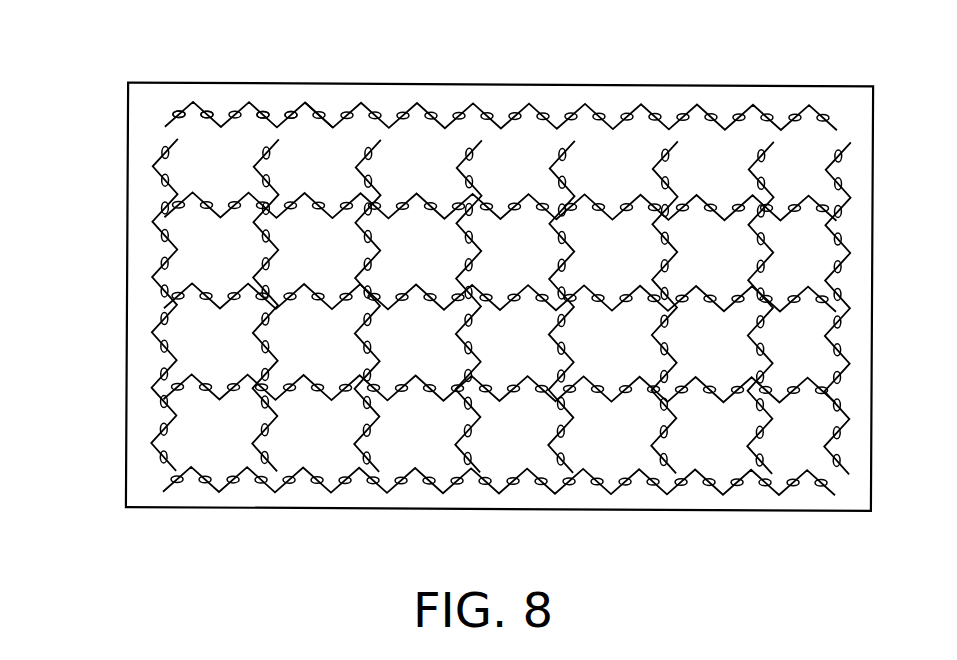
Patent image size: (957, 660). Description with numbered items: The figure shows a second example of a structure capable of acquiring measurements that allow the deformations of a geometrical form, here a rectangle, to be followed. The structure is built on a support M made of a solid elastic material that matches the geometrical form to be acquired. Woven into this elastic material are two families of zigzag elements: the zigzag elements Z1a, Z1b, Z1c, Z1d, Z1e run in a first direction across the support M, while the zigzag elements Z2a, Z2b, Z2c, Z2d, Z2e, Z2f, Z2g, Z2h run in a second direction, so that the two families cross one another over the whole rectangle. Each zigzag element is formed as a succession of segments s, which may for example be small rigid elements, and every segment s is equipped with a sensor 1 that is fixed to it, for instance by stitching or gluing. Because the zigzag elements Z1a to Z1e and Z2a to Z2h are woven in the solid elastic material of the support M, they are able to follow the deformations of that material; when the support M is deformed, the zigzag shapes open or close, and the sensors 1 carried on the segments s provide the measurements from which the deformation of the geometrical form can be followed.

The sensor 1 is at (292, 112).
The segment S is at (313, 108).
The support M is at (725, 102).
The zigzag element Z1a is at (173, 118).
The zigzag element Z1b is at (182, 194).
The zigzag element Z1c is at (172, 301).
The zigzag element Z1d is at (170, 393).
The zigzag element Z1e is at (170, 485).
The zigzag element Z2a is at (155, 453).
The zigzag element Z2b is at (256, 453).
The zigzag element Z2c is at (358, 453).
The zigzag element Z2d is at (459, 453).
The zigzag element Z2e is at (552, 453).
The zigzag element Z2f is at (655, 453).
The zigzag element Z2g is at (751, 453).
The zigzag element Z2h is at (828, 453).